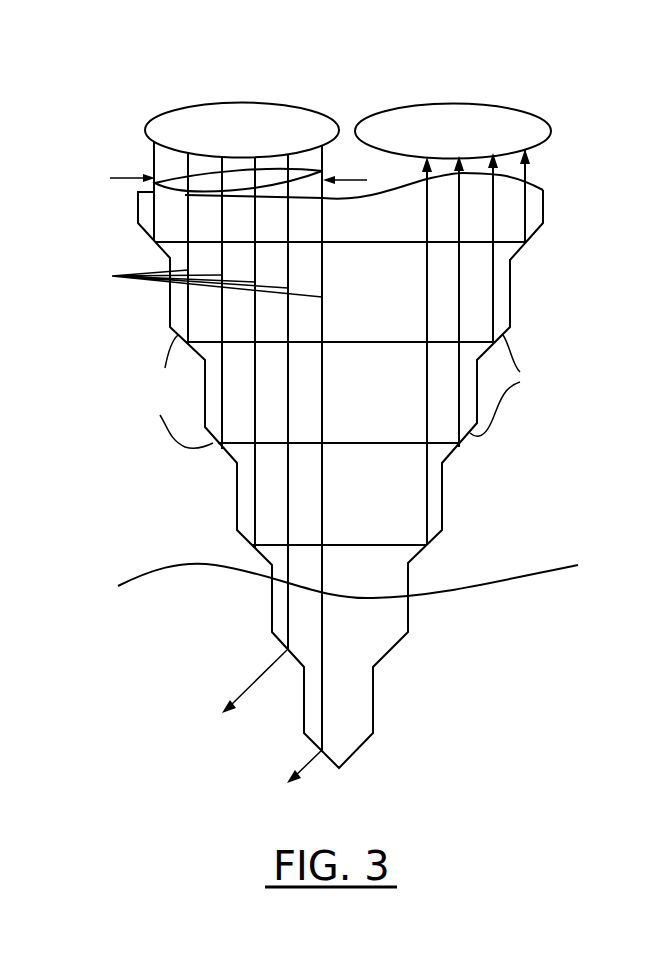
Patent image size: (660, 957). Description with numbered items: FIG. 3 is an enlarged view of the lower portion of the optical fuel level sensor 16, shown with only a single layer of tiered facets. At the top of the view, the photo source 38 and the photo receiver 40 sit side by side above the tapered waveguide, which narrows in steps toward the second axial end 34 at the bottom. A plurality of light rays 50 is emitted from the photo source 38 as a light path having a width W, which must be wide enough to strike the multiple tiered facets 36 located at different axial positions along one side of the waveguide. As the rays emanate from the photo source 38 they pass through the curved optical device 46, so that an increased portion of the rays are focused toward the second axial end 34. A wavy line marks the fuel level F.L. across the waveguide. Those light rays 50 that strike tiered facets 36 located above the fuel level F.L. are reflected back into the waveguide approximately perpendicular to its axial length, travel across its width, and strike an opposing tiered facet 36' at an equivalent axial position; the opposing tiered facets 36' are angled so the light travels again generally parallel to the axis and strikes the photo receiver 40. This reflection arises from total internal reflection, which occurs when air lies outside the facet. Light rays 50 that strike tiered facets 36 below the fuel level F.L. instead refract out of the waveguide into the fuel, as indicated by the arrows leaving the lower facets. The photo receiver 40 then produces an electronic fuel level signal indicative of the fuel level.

The optical fuel level sensor 16 is at (592, 121).
The photo source 38 is at (255, 103).
The photo receiver 40 is at (452, 105).
The curved optical device 46 is at (200, 192).
The light rays 50 is at (197, 277).
The tiered facets 36 is at (177, 391).
The opposing tiered facet 36' is at (517, 385).
The second axial end 34 is at (410, 741).
The width of light path W is at (218, 174).
The fuel level F.L. is at (512, 572).